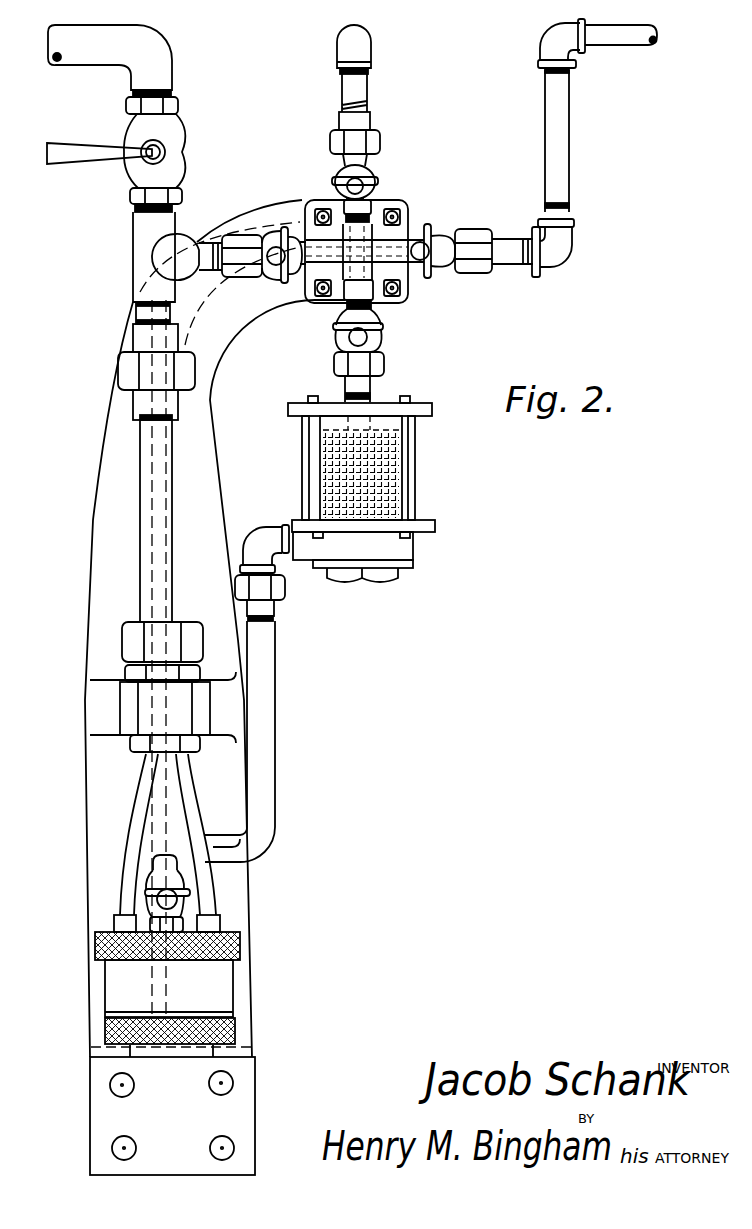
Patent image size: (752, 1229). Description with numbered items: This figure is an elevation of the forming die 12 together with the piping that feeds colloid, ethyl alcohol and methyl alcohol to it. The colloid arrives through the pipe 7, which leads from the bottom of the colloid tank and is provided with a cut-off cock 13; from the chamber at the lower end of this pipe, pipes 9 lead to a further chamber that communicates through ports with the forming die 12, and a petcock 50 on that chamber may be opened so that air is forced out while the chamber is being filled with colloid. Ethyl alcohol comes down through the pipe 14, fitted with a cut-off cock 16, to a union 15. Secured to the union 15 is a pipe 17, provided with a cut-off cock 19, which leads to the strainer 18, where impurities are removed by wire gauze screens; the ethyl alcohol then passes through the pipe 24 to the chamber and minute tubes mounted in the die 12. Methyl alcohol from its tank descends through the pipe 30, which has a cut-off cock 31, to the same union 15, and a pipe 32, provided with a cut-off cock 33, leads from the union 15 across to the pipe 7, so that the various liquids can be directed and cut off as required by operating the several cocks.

The pipe 7 is at (73, 58).
The pipes 9 is at (143, 795).
The forming die 12 is at (197, 1048).
The cut-off cock 13 is at (137, 162).
The pipe 14 is at (357, 91).
The union 15 is at (400, 236).
The cut-off cock 16 is at (342, 172).
The pipe 17 is at (374, 296).
The strainer 18 is at (413, 463).
The cut-off cock 19 is at (380, 336).
The pipe 24 is at (263, 715).
The pipe 30 is at (628, 38).
The cut-off cock 31 is at (432, 236).
The pipe 32 is at (207, 243).
The cut-off cock 33 is at (283, 247).
The petcock 50 is at (185, 905).